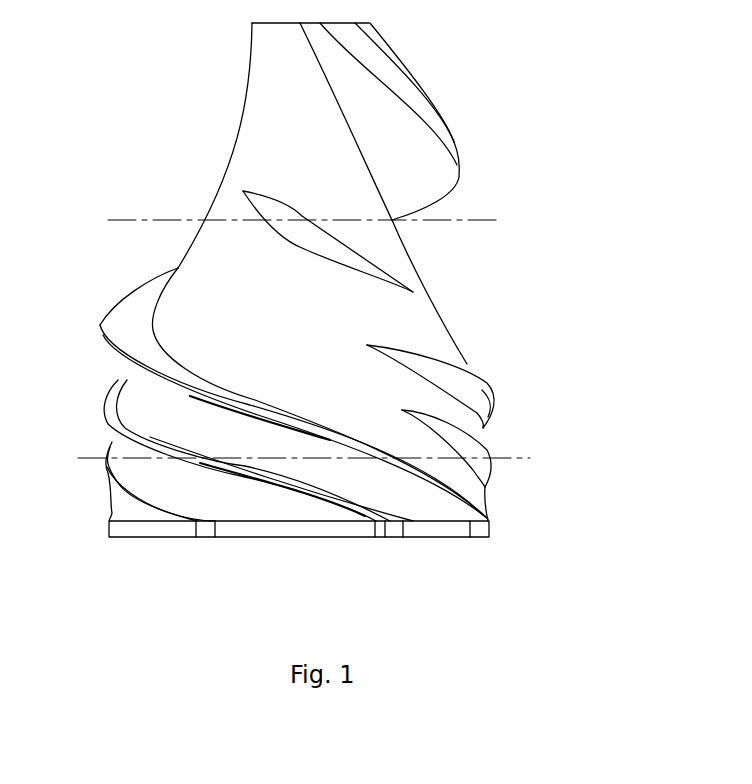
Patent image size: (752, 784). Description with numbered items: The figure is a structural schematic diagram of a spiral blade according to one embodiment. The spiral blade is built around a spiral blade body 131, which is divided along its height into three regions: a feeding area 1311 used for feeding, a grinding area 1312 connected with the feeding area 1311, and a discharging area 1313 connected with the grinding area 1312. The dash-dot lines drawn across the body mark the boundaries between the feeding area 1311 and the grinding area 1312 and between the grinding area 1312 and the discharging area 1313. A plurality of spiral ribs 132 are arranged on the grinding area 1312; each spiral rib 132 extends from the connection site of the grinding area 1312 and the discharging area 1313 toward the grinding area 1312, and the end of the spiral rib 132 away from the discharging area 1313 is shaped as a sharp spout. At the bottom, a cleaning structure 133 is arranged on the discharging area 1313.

The spiral blade body 131 is at (592, 175).
The feeding area 1311 is at (347, 178).
The grinding area 1312 is at (365, 320).
The discharging area 1313 is at (423, 510).
The spiral rib 132 is at (113, 347).
The cleaning structure 133 is at (210, 530).